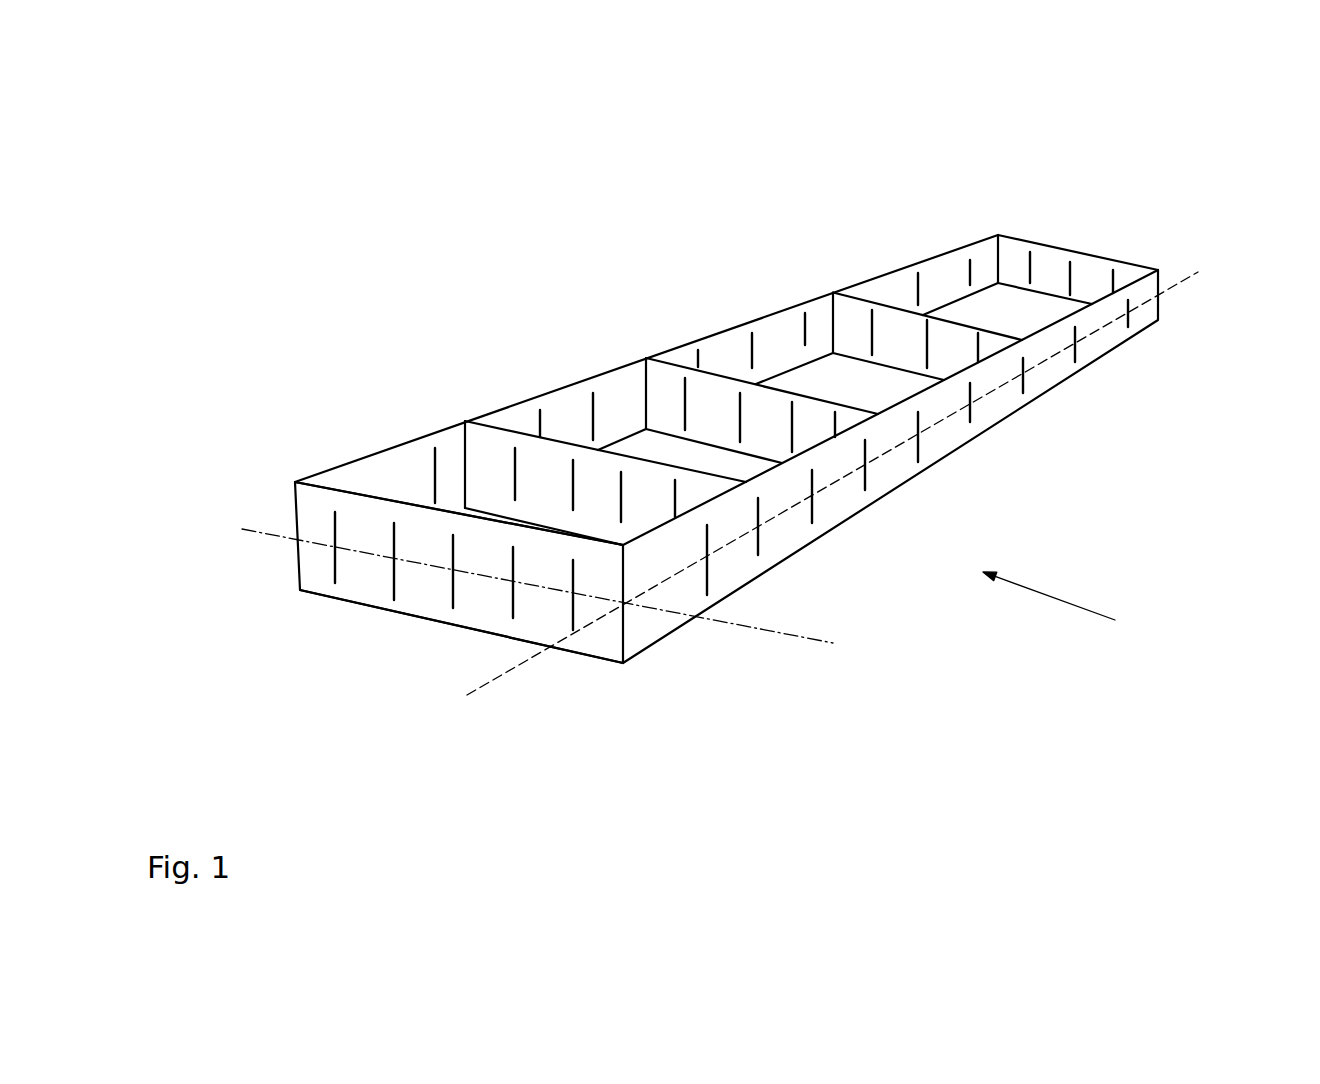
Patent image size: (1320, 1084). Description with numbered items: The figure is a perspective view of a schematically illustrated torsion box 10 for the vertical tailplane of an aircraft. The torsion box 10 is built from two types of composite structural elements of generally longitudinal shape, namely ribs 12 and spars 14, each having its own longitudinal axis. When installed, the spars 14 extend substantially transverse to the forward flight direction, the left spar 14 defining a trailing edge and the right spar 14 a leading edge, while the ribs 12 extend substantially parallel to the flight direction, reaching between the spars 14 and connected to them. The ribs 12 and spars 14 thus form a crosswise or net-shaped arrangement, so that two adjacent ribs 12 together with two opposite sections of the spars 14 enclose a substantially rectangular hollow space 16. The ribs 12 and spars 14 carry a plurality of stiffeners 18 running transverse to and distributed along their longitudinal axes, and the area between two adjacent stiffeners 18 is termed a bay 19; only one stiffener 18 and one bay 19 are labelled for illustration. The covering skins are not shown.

The torsion box 10 is at (1165, 182).
The rib 12 is at (480, 450).
The spar 14 is at (342, 483).
The hollow space 16 is at (450, 373).
The stiffener 18 is at (393, 600).
The bay 19 is at (433, 587).